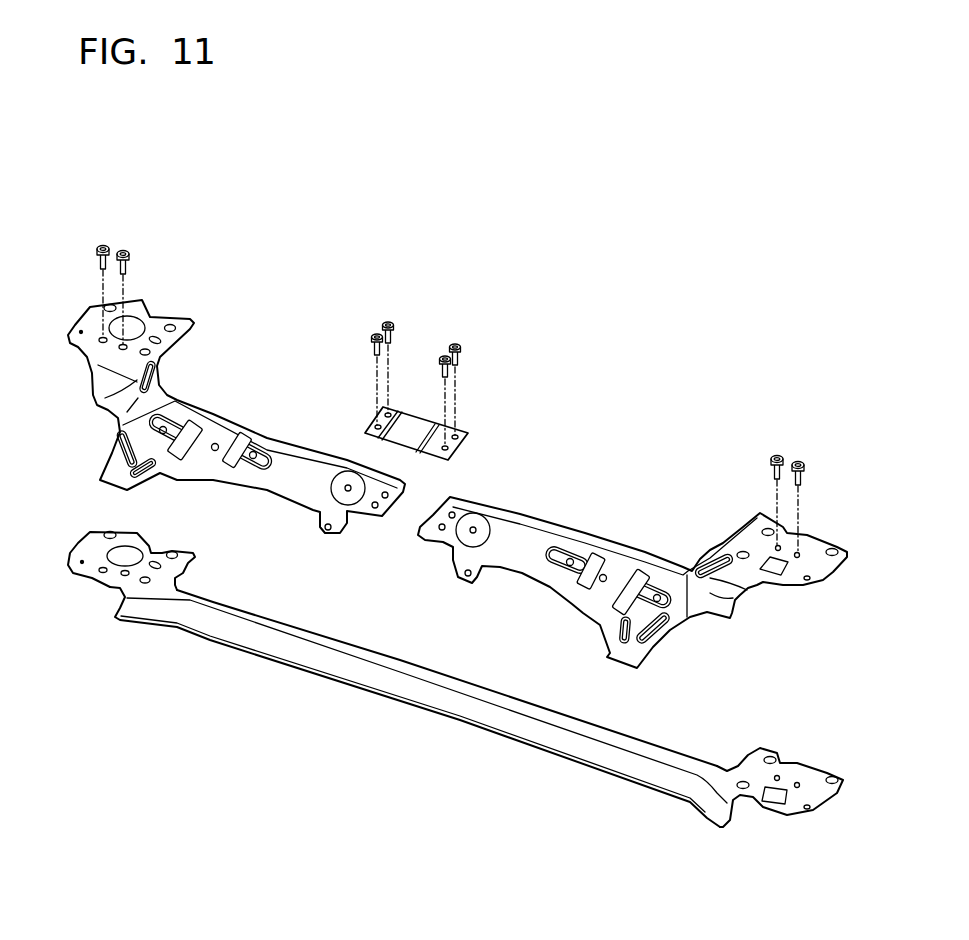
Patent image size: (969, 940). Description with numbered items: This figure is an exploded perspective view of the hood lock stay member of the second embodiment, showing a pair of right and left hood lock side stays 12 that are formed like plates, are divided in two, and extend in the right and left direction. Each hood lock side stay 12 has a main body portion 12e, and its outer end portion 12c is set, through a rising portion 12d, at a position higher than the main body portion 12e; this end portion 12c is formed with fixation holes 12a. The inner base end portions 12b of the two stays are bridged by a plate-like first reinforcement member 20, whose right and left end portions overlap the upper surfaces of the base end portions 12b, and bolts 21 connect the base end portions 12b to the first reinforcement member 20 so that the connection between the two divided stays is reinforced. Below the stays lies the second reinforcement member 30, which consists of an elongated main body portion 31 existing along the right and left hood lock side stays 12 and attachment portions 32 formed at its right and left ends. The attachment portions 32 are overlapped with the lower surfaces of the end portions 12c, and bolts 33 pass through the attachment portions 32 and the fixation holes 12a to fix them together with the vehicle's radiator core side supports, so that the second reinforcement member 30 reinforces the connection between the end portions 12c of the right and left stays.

The hood lock side stay 12 is at (238, 413).
The fixation hole 12a is at (113, 300).
The base end portion 12b is at (383, 518).
The end portion 12c is at (90, 322).
The rising portion 12d is at (137, 405).
The main body portion 12e is at (299, 467).
The first reinforcement member 20 is at (418, 424).
The bolt 21 is at (384, 324).
The second reinforcement member 30 is at (463, 665).
The main body portion 31 is at (327, 660).
The attachment portion 32 is at (93, 548).
The bolt 33 is at (123, 251).